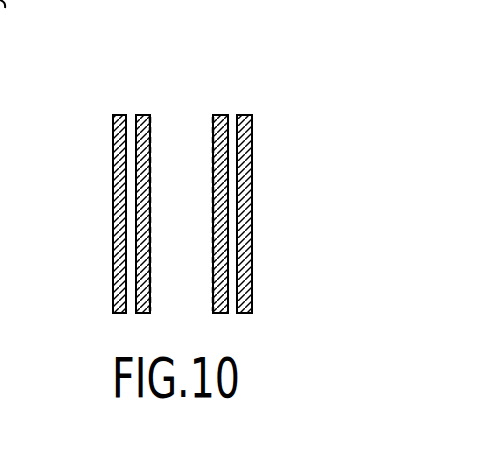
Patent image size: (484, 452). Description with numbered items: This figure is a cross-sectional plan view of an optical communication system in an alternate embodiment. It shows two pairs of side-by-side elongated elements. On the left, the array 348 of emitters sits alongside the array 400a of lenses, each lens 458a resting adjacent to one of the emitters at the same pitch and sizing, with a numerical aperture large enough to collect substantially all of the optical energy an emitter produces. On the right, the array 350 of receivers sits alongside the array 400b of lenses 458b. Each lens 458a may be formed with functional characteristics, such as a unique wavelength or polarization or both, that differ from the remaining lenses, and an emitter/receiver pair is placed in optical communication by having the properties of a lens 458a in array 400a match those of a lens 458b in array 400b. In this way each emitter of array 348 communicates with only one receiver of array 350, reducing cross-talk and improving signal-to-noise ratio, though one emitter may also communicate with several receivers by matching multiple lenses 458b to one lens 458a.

The emitter array 348 is at (113, 113).
The receiver array 350 is at (252, 138).
The first lens array 400a is at (148, 115).
The second lens array 400b is at (222, 113).
The lens of first array 458a is at (150, 130).
The lens of second array 458b is at (213, 132).